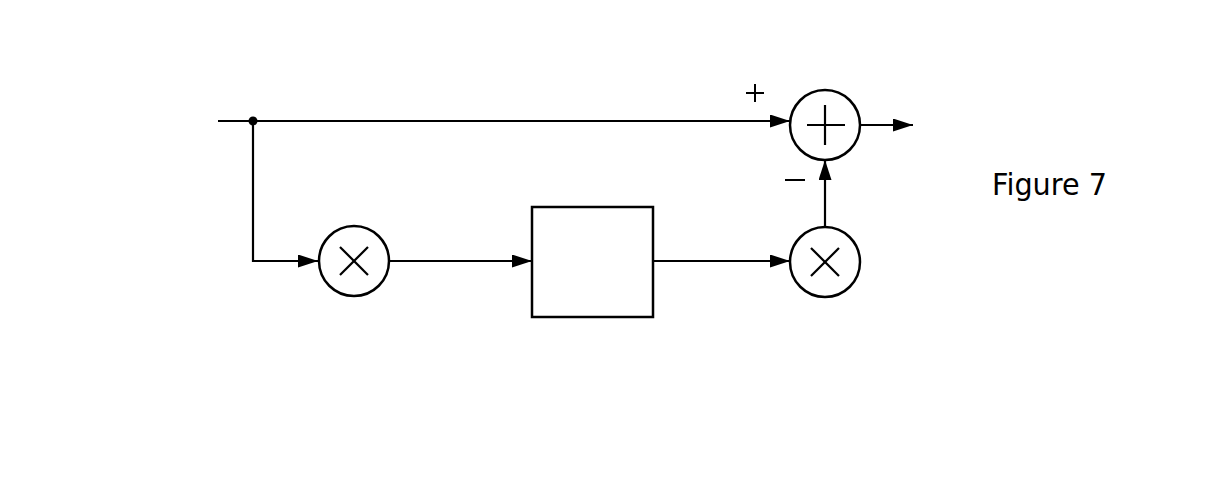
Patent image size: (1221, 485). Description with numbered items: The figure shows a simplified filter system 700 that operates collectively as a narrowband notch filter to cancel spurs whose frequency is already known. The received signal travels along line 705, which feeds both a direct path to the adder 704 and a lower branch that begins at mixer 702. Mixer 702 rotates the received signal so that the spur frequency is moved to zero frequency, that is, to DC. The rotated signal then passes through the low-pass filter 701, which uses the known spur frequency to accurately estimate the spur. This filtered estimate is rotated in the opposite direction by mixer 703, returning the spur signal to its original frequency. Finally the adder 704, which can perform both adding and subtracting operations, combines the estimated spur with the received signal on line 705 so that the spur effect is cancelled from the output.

The simplified filter system 700 is at (447, 77).
The low-pass filter 701 is at (661, 262).
The mixer 702 is at (357, 296).
The mixer 703 is at (828, 297).
The adder 704 is at (821, 90).
The line 705 is at (305, 121).